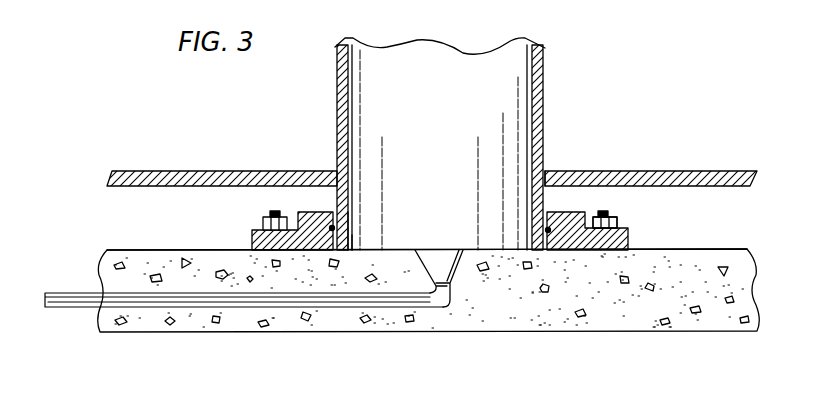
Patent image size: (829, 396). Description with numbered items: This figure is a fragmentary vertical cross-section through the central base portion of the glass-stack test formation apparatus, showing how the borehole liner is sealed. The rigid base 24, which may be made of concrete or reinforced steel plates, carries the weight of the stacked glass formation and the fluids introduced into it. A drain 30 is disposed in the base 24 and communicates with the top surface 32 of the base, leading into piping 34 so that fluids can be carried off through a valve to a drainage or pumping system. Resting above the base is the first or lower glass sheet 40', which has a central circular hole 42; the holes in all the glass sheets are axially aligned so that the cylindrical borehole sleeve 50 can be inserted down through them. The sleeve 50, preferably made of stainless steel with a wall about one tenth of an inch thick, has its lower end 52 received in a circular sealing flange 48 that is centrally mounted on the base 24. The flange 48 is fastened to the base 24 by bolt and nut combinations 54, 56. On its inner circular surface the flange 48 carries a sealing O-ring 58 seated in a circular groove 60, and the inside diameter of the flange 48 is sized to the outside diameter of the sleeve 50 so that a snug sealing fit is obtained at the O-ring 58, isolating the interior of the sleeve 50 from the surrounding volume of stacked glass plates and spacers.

The rigid base 24 is at (733, 283).
The drain 30 is at (443, 250).
The top surface of the base 32 is at (727, 247).
The piping 34 is at (88, 303).
The lower glass sheet 40' is at (432, 149).
The central circular hole 42 is at (546, 168).
The circular sealing flange 48 is at (252, 233).
The borehole cylinder 50 is at (545, 67).
The lower end of the sleeve 52 is at (355, 248).
The bolt 54 is at (610, 212).
The nut 56 is at (632, 222).
The sealing O-ring 58 is at (346, 215).
The circular groove 60 is at (332, 228).